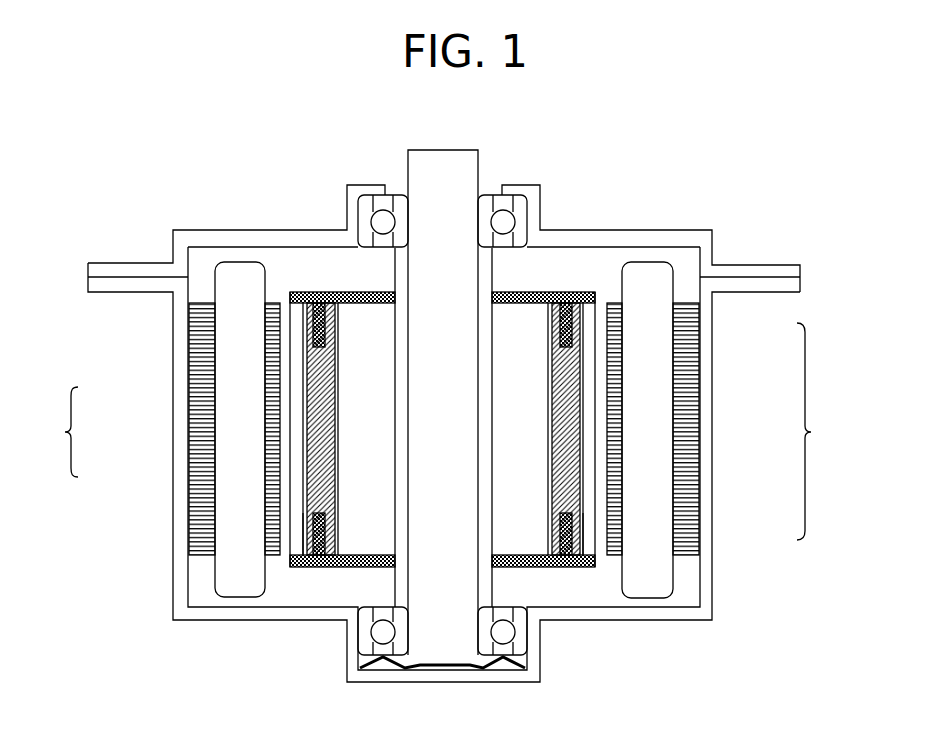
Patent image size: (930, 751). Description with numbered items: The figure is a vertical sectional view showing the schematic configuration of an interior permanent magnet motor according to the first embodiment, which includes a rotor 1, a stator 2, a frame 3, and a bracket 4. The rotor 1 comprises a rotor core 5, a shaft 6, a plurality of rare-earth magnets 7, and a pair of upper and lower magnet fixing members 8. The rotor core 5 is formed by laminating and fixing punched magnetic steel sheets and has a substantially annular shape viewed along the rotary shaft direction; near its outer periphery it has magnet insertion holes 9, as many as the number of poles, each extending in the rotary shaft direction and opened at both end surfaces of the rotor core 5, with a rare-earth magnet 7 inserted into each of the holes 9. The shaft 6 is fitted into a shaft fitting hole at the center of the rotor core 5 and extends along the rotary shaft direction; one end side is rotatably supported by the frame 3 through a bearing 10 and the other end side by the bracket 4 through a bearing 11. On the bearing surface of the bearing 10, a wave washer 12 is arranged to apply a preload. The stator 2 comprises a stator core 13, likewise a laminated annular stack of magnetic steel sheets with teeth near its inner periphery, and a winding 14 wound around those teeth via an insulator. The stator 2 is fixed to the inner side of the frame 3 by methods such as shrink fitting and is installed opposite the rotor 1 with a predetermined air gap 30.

The rotor 1 is at (813, 445).
The stator 2 is at (61, 444).
The frame 3 is at (703, 612).
The bracket 4 is at (705, 240).
The rotor core 5 is at (583, 357).
The shaft 6 is at (462, 410).
The rare-earth magnet 7 is at (570, 438).
The magnet fixing member 8 is at (573, 513).
The magnet insertion hole 9 is at (580, 533).
The bearing 10 is at (518, 630).
The bearing 11 is at (518, 217).
The wave washer 12 is at (527, 660).
The stator core 13 is at (200, 415).
The winding 14 is at (240, 462).
The air gap 30 is at (287, 528).